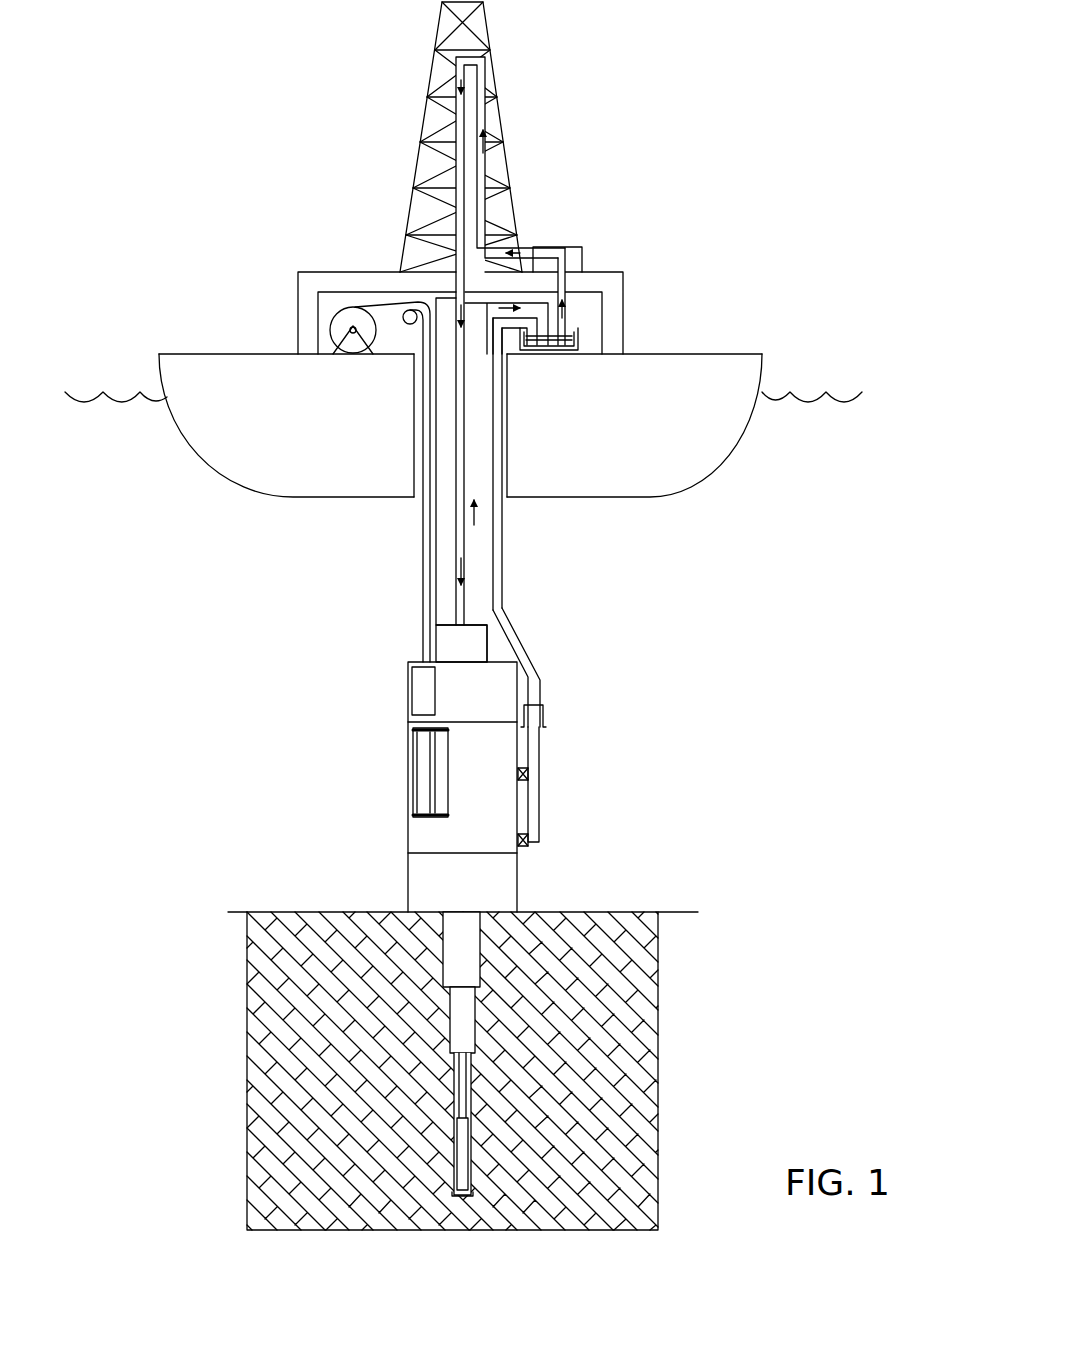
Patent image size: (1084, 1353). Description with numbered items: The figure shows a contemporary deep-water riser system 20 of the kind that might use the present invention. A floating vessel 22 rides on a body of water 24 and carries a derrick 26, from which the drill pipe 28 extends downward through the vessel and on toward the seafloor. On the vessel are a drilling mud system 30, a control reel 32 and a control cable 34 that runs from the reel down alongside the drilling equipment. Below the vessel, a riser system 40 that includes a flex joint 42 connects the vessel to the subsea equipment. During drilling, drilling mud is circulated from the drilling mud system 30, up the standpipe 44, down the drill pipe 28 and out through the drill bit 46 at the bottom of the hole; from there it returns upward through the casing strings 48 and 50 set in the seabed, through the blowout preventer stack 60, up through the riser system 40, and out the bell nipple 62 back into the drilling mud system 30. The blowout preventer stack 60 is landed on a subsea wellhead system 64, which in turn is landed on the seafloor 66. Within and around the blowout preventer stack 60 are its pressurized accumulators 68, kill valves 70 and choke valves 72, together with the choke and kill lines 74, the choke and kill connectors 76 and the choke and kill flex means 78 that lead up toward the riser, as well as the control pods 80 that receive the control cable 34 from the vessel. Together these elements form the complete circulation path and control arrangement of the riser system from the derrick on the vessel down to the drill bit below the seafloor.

The system 20 is at (708, 653).
The floating vessel 22 is at (672, 466).
The body of water 24 is at (815, 388).
The derrick 26 is at (508, 162).
The drill pipe 28 is at (467, 86).
The drilling mud system 30 is at (578, 338).
The control reel 32 is at (345, 338).
The control cable 34 is at (420, 575).
The riser system 40 is at (490, 580).
The flex joint 42 is at (473, 638).
The standpipe 44 is at (487, 122).
The drill bit 46 is at (470, 1193).
The casing string 48 is at (475, 1013).
The casing string 50 is at (485, 970).
The blowout preventer stack 60 is at (412, 840).
The bell nipple 62 is at (488, 303).
The subsea wellhead system 64 is at (408, 872).
The seafloor 66 is at (535, 913).
The pressurized accumulators 68 is at (418, 767).
The kill valves 70 is at (540, 840).
The choke valves 72 is at (530, 772).
The choke and kill lines 74 is at (505, 322).
The choke and kill connectors 76 is at (540, 713).
The choke and kill flex means 78 is at (522, 645).
The control pods 80 is at (418, 693).